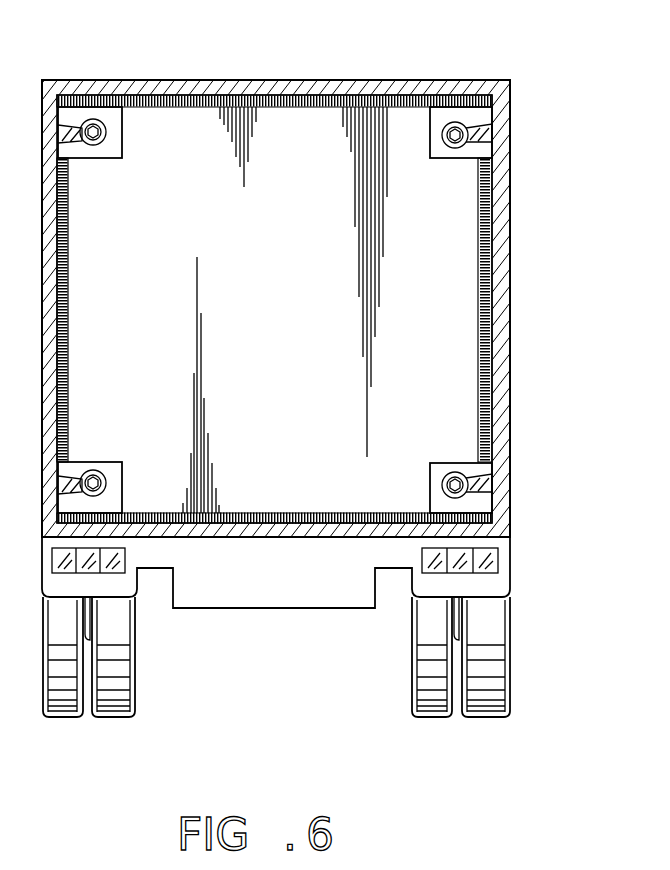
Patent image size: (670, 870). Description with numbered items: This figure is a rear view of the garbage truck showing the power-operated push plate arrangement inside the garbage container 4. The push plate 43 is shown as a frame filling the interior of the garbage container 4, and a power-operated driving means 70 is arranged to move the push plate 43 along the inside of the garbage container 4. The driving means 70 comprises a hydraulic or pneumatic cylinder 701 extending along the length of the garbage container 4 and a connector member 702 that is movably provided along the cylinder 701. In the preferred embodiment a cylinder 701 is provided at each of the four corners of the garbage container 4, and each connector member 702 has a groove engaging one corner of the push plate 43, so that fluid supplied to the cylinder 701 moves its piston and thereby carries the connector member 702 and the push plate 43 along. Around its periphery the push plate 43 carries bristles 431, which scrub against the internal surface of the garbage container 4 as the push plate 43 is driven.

The garbage container 4 is at (541, 190).
The push plate 43 is at (311, 125).
The peripheral bristles 431 is at (253, 98).
The power-operated driving means 70 is at (455, 115).
The hydraulic cylinder 701 is at (455, 148).
The connector member 702 is at (440, 118).